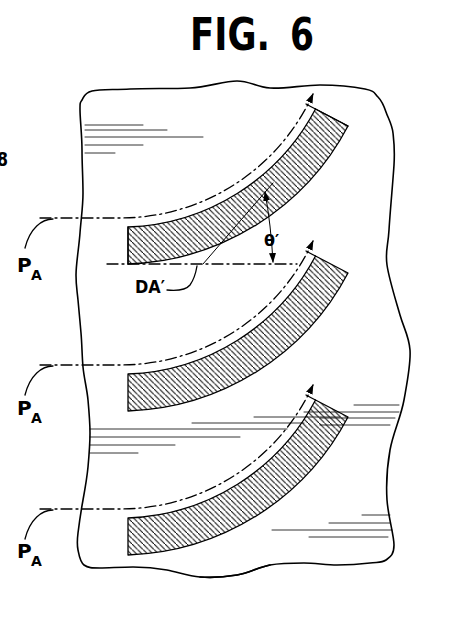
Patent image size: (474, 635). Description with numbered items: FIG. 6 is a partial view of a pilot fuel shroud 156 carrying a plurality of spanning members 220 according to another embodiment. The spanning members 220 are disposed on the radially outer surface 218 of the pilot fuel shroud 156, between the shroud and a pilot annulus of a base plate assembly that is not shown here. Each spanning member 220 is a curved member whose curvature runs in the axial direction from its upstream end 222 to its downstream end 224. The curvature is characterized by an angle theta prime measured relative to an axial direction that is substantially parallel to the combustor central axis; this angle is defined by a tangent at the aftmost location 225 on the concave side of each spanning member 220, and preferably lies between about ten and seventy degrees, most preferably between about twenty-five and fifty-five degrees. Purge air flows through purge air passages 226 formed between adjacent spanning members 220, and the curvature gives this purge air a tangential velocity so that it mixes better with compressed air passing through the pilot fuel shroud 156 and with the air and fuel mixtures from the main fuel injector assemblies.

The pilot fuel shroud 156 is at (300, 567).
The radially outer surface 218 is at (377, 165).
The spanning member 220 is at (218, 213).
The upstream end 222 is at (128, 248).
The downstream end 224 is at (334, 118).
The aftmost location 225 is at (316, 109).
The purge air passage 226 is at (127, 192).